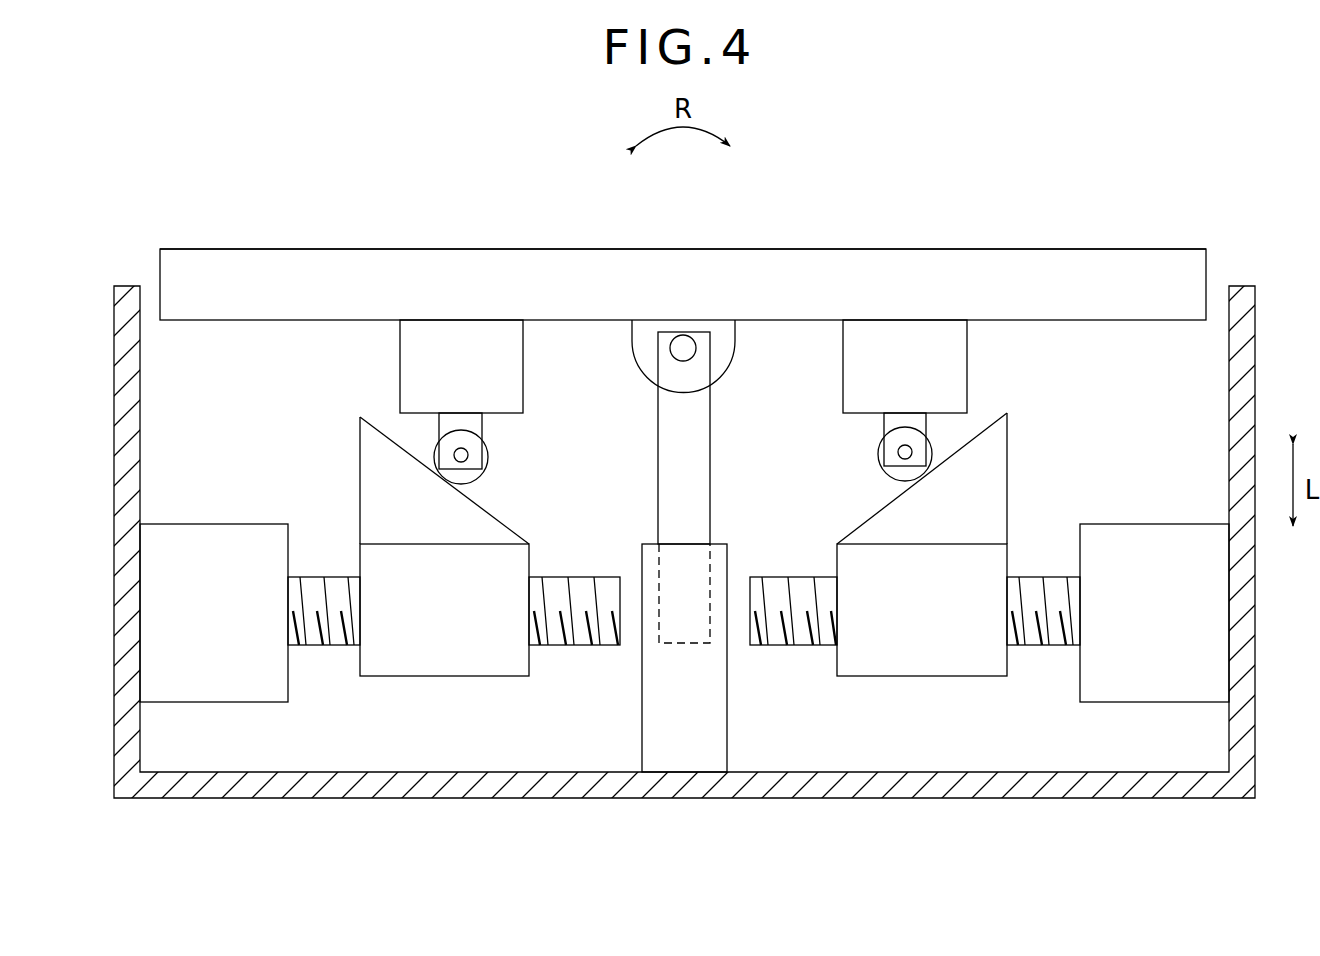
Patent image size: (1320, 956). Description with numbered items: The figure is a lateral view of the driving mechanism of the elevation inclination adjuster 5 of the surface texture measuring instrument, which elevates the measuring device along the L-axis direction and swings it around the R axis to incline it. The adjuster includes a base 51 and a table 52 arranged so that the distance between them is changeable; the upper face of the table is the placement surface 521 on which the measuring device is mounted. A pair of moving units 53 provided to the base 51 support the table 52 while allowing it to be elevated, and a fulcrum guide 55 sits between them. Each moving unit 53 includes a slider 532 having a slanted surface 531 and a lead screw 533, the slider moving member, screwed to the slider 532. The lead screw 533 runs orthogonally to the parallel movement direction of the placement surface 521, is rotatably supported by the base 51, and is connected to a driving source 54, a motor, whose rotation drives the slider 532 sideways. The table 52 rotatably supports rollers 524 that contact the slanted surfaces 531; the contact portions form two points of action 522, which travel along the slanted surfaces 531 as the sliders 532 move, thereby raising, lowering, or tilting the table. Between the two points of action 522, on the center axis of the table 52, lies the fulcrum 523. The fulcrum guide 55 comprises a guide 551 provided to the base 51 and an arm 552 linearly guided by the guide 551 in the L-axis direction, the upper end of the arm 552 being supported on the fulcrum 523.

The elevation inclination adjuster 5 is at (141, 158).
The base 51 is at (617, 792).
The table 52 is at (795, 259).
The placement surface 521 is at (424, 249).
The point of action 522 is at (448, 482).
The fulcrum 523 is at (683, 335).
The roller 524 is at (490, 451).
The moving unit 53 is at (683, 602).
The slanted surface 531 is at (378, 422).
The slider 532 is at (370, 482).
The lead screw 533 is at (318, 648).
The driving source 54 is at (213, 536).
The fulcrum guide 55 is at (681, 552).
The guide 551 is at (660, 698).
The arm 552 is at (668, 506).